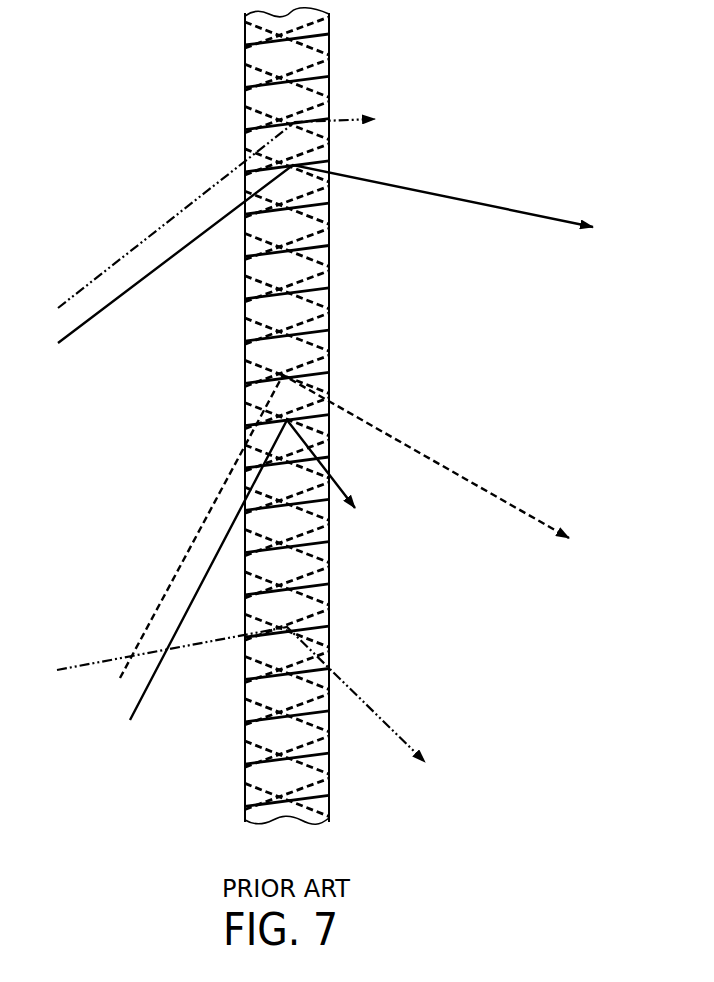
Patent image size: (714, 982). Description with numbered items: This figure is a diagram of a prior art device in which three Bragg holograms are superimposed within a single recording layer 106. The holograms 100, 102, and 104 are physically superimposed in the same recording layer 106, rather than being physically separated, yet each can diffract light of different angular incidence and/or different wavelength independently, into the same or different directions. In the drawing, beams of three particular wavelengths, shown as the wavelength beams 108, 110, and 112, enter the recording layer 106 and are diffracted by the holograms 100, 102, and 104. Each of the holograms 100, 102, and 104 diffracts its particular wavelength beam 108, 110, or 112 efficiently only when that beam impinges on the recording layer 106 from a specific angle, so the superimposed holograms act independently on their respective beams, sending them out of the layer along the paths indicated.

The hologram 100 is at (278, 88).
The hologram 102 is at (303, 252).
The hologram 104 is at (315, 783).
The recording layer 106 is at (292, 348).
The wavelength beam 108 is at (110, 303).
The wavelength beam 110 is at (93, 280).
The wavelength beam 112 is at (187, 550).